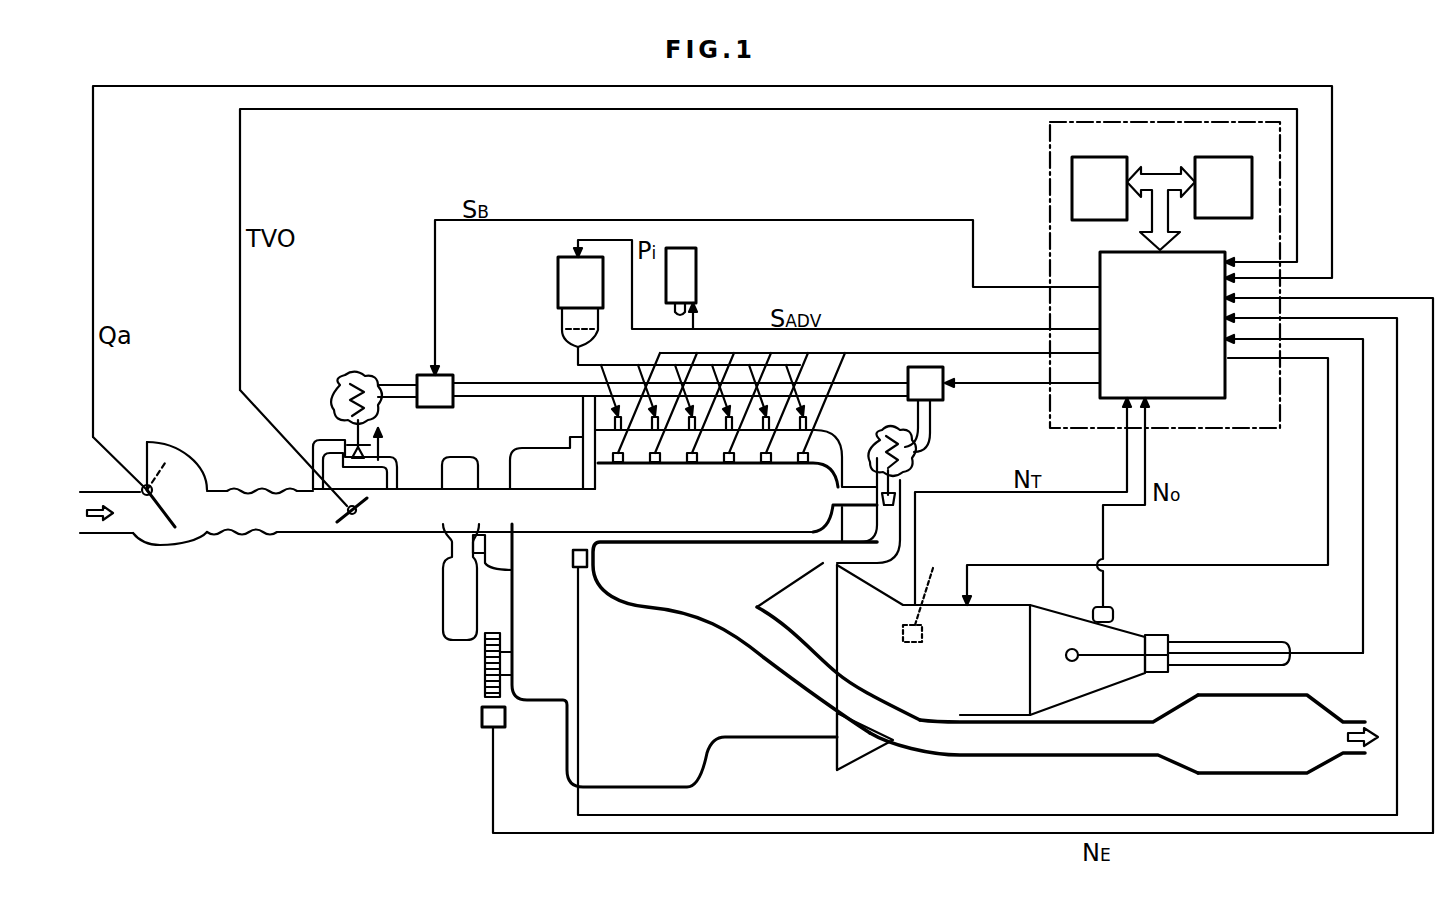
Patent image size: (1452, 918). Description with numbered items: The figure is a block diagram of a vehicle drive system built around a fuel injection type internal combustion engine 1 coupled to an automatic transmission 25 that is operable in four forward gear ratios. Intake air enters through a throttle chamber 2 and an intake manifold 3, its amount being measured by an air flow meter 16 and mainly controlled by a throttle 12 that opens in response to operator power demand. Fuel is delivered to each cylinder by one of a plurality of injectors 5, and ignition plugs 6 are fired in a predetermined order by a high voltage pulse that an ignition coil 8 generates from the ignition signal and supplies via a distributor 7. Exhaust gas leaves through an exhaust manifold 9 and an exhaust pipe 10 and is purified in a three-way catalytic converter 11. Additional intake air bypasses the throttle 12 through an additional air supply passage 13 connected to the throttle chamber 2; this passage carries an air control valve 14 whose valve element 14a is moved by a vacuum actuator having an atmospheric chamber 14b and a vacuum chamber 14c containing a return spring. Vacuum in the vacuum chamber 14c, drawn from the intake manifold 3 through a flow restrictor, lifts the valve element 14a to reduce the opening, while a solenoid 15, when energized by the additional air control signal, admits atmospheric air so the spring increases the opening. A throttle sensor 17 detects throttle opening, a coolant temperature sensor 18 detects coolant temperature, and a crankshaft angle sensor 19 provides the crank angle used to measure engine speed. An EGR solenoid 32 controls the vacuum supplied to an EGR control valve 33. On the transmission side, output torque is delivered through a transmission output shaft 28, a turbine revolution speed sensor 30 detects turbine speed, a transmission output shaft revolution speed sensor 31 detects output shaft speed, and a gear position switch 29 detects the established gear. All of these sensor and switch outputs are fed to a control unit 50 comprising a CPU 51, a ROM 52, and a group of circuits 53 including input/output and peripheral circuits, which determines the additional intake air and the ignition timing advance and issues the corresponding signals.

The internal combustion engine 1 is at (517, 447).
The throttle chamber 2 is at (312, 524).
The intake manifold 3 is at (715, 510).
The injectors 5 is at (618, 463).
The ignition plugs 6 is at (593, 427).
The distributor 7 is at (558, 290).
The ignition coil 8 is at (696, 275).
The exhaust manifold 9 is at (712, 595).
The exhaust pipe 10 is at (1015, 745).
The three-way catalytic converter 11 is at (1258, 749).
The throttle 12 is at (349, 528).
The additional air supply passage 13 is at (390, 448).
The air control valve 14 is at (338, 409).
The valve element 14a is at (345, 445).
The atmospheric chamber 14b is at (340, 410).
The vacuum chamber 14c is at (355, 376).
The solenoid 15 is at (453, 372).
The air flow meter 16 is at (160, 518).
The throttle sensor 17 is at (357, 524).
The coolant temperature sensor 18 is at (573, 560).
The crankshaft angle sensor 19 is at (482, 717).
The automatic transmission 25 is at (1005, 590).
The transmission output shaft 28 is at (1218, 640).
The gear position switch 29 is at (1076, 661).
The turbine revolution speed sensor 30 is at (929, 593).
The transmission output shaft revolution speed sensor 31 is at (1115, 610).
The EGR solenoid 32 is at (947, 400).
The EGR control valve 33 is at (932, 462).
The control unit 50 is at (1048, 183).
The CPU 51 is at (1115, 204).
The ROM 52 is at (1240, 204).
The group of circuits 53 is at (1180, 339).